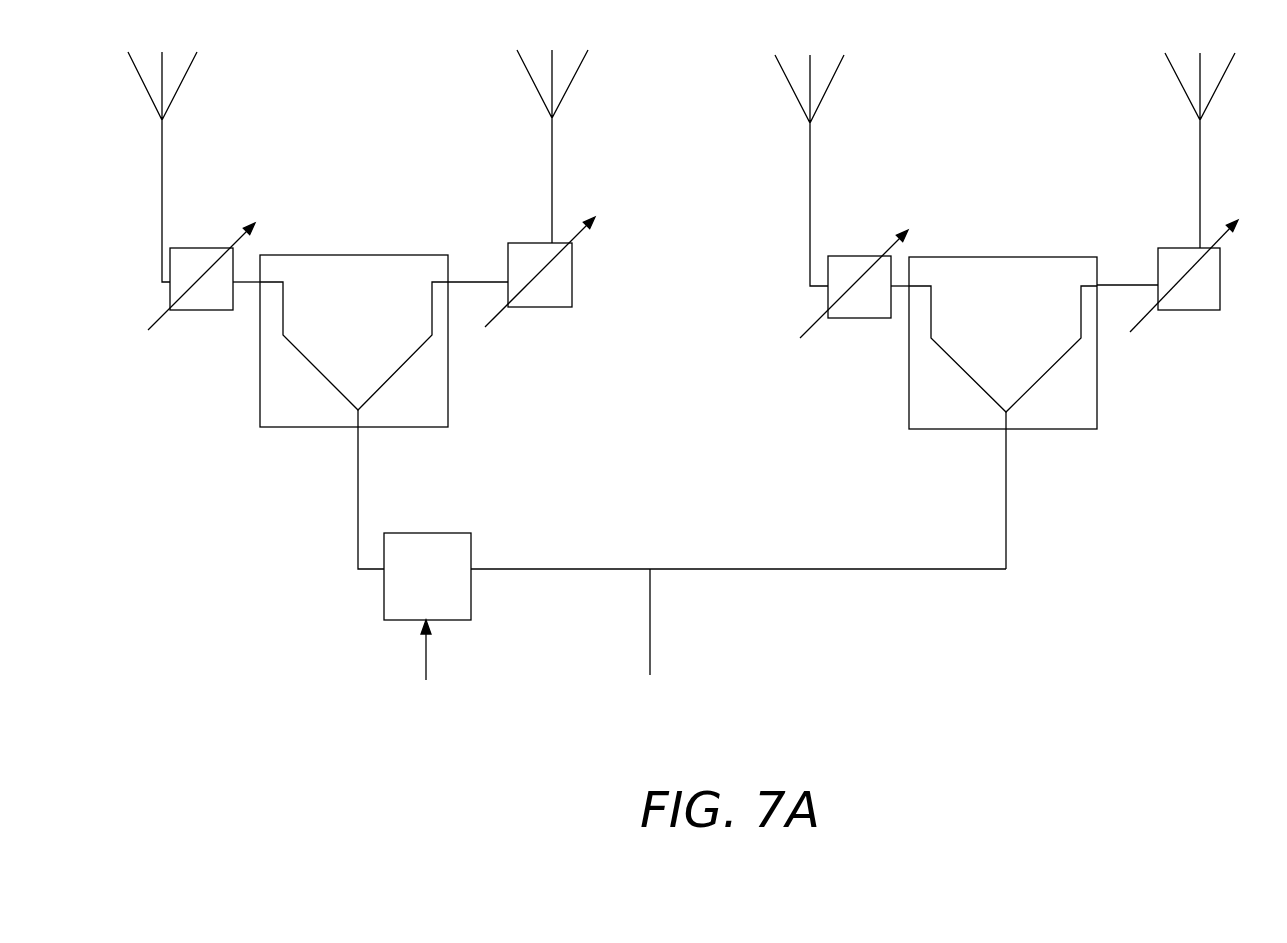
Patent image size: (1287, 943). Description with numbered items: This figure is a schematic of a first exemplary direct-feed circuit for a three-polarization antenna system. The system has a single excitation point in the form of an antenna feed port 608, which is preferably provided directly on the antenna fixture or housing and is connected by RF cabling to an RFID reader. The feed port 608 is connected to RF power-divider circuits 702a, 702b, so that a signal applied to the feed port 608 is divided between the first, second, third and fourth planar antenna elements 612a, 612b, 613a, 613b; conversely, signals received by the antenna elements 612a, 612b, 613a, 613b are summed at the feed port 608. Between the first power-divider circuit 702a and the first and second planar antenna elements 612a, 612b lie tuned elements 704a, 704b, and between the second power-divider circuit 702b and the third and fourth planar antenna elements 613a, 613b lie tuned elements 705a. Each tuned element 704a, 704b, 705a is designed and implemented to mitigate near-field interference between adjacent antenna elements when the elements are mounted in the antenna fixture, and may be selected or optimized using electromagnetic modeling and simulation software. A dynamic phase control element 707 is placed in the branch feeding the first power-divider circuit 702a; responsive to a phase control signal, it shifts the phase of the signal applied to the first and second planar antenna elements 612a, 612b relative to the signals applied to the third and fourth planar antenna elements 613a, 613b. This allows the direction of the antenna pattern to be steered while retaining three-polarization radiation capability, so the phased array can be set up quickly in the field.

The first planar antenna element 612a is at (162, 136).
The second planar antenna element 612b is at (552, 163).
The third planar antenna element 613a is at (810, 140).
The fourth planar antenna element 613b is at (1200, 167).
The tuned element 704a is at (217, 313).
The tuned element 704b is at (555, 307).
The tuned element 705a is at (880, 318).
The RF power-divider circuit 702a is at (447, 395).
The RF power-divider circuit 702b is at (1092, 400).
The dynamic phase control element 707 is at (471, 549).
The antenna feed port 608 is at (650, 638).